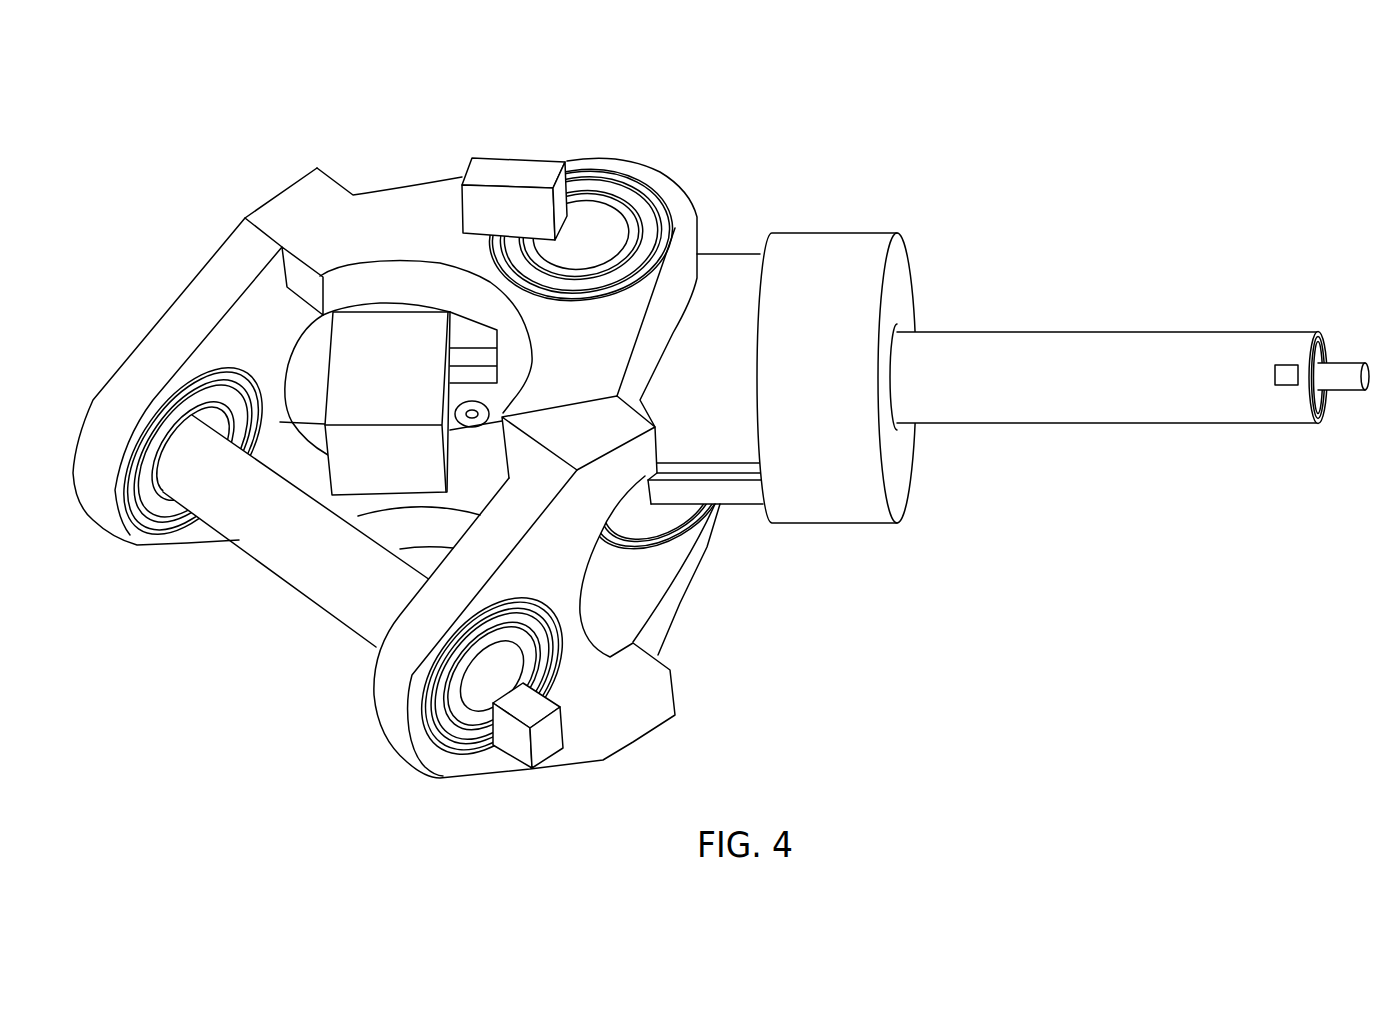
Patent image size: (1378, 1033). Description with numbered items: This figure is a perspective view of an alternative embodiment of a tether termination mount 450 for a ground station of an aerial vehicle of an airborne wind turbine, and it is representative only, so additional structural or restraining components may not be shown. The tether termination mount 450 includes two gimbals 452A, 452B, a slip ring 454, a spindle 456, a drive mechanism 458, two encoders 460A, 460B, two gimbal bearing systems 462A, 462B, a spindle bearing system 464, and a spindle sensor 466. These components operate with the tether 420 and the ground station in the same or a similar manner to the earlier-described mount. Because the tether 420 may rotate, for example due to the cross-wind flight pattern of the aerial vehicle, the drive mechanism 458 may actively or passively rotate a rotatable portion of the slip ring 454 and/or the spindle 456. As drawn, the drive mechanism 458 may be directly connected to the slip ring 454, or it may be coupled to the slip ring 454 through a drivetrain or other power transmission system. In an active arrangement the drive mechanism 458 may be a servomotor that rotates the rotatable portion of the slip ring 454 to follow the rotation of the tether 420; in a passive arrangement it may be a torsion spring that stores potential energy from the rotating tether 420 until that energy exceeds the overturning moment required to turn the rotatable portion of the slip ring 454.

The tether termination mount 450 is at (655, 108).
The gimbal 452A is at (147, 373).
The gimbal 452B is at (580, 167).
The slip ring 454 is at (845, 247).
The spindle 456 is at (1092, 410).
The drive mechanism 458 is at (400, 369).
The encoder 460A is at (543, 753).
The encoder 460B is at (488, 168).
The gimbal bearing system 462A is at (157, 518).
The gimbal bearing system 462B is at (640, 210).
The spindle bearing system 464 is at (1318, 420).
The spindle sensor 466 is at (1288, 388).
The tether 420 is at (1337, 368).